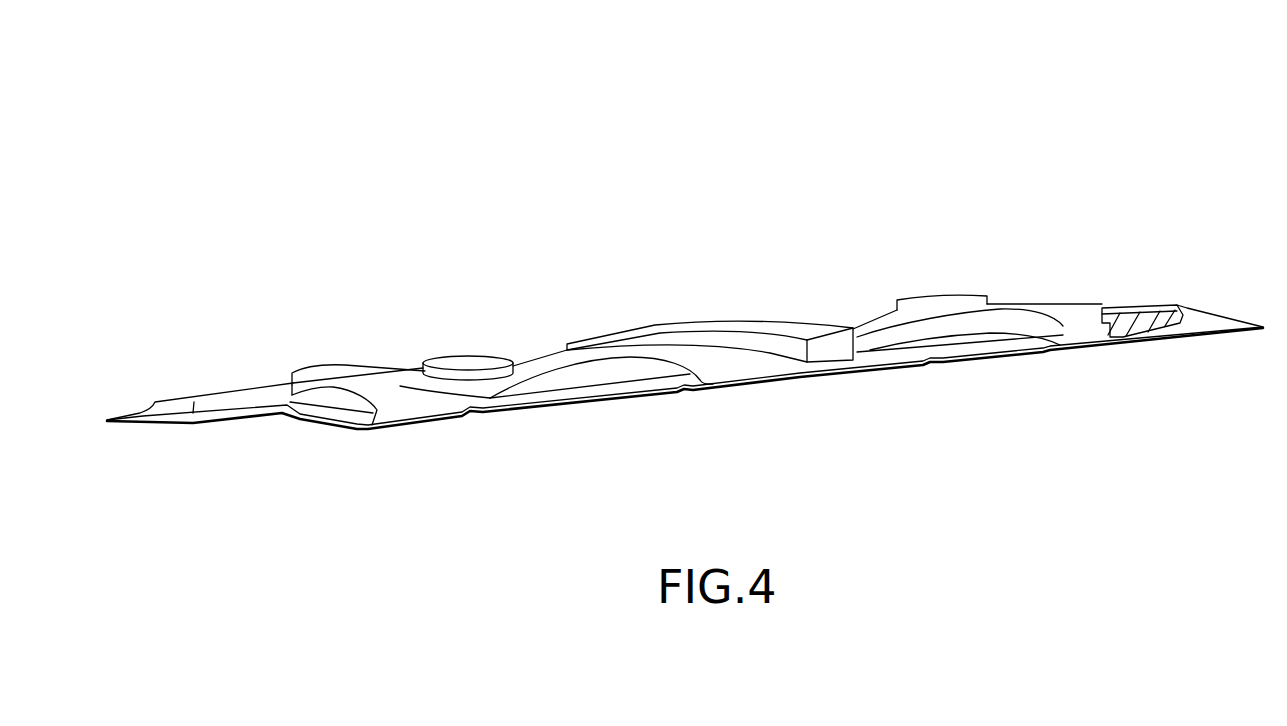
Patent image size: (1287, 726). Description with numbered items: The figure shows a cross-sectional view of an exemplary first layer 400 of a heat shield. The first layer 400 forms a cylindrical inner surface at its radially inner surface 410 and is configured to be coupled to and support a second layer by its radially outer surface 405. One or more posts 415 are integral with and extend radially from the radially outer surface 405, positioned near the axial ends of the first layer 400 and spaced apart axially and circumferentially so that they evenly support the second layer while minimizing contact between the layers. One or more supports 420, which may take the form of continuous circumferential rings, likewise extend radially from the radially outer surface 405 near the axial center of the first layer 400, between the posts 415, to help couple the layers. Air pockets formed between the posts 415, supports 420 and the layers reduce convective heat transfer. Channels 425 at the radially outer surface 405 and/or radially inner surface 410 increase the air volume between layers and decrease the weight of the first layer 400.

The first layer 400 is at (332, 157).
The radially outer surface 405 is at (385, 402).
The radially inner surface 410 is at (978, 360).
The posts 415 is at (470, 357).
The supports 420 is at (780, 325).
The channels 425 is at (648, 370).